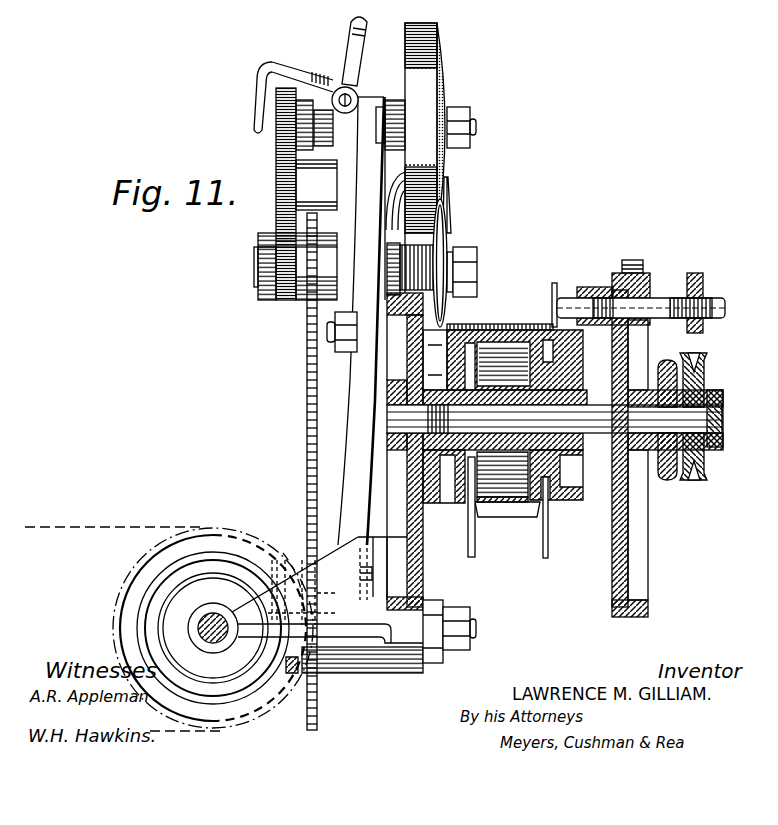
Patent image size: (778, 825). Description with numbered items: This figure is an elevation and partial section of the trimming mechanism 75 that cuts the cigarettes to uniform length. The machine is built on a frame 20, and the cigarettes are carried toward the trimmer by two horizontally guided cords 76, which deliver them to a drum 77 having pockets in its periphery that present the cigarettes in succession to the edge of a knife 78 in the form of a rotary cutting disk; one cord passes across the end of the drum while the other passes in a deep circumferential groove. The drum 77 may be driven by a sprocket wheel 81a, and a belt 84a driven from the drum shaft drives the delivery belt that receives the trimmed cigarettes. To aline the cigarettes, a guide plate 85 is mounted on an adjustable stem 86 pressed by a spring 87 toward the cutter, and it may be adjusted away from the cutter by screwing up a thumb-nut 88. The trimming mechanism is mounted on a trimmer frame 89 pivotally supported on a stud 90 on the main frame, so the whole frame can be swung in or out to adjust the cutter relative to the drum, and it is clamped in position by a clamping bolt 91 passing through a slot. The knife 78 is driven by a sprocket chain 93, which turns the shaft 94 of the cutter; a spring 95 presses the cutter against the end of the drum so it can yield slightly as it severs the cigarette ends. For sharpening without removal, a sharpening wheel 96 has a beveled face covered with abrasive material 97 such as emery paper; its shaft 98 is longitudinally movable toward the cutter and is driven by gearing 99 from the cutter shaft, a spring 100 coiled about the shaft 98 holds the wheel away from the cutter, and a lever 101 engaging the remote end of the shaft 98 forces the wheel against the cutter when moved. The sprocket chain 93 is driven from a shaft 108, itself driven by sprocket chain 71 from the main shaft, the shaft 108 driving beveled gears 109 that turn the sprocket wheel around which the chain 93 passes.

The frame 20 is at (640, 585).
The sprocket chain 71 is at (84, 527).
The trimming mechanism 75 is at (466, 285).
The cords 76 is at (476, 540).
The drum 77 is at (549, 542).
The knife 78 is at (451, 197).
The sprocket wheel 81a is at (668, 480).
The belt 84a is at (703, 475).
The plate 85 is at (554, 283).
The adjustable stem 86 is at (686, 290).
The spring 87 is at (598, 300).
The thumb-nut 88 is at (706, 298).
The trimmer frame 89 is at (365, 388).
The stud 90 is at (472, 628).
The clamping bolt 91 is at (336, 336).
The sprocket chain 93 is at (306, 450).
The shaft of the cutter 94 is at (258, 283).
The spring 95 is at (446, 256).
The sharpening wheel 96 is at (438, 63).
The abrasive material 97 is at (446, 88).
The shaft of the sharpening wheel 98 is at (474, 127).
The gearing 99 is at (278, 153).
The spring 100 is at (328, 107).
The lever 101 is at (272, 66).
The shaft 108 is at (200, 622).
The beveled gears 109 is at (268, 548).